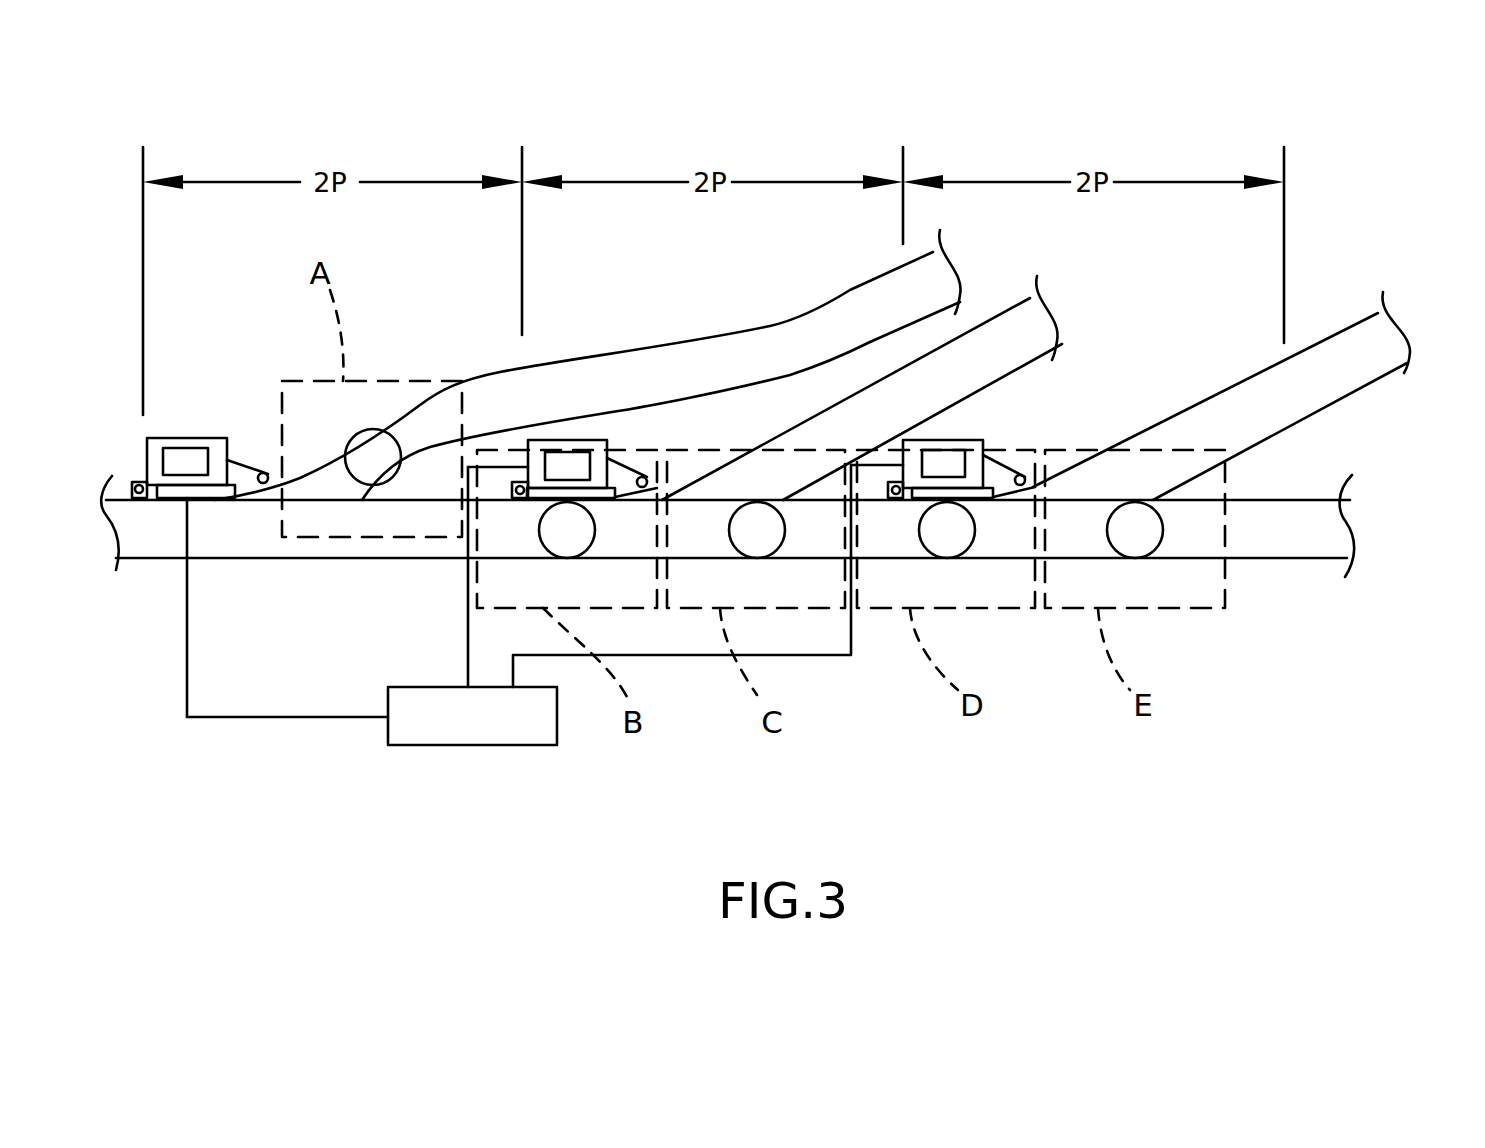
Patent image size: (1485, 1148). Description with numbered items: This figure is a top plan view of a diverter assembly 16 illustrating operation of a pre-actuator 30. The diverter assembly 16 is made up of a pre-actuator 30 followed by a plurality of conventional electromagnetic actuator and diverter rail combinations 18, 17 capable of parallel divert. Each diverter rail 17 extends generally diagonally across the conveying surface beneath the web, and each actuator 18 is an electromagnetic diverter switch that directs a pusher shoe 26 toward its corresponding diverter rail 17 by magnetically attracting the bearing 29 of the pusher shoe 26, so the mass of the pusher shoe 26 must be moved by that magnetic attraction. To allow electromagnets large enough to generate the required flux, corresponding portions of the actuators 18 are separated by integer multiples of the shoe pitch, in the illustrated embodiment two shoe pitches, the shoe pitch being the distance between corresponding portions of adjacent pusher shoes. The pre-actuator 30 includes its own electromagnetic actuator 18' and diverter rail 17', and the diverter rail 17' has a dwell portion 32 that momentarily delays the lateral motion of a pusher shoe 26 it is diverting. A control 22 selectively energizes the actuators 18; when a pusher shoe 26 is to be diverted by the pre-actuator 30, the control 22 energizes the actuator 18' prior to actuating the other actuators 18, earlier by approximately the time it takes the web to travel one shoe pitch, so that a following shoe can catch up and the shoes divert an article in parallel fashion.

The diverter assembly 16 is at (1455, 208).
The diverter rail 17 is at (1036, 357).
The diverter rail of pre-actuator 17' is at (661, 362).
The actuator 18 is at (810, 376).
The electromagnetic actuator of pre-actuator 18' is at (200, 503).
The control 22 is at (597, 737).
The pusher shoe 26 is at (405, 381).
The bearing 29 is at (548, 505).
The pre-actuator 30 is at (252, 234).
The dwell portion 32 is at (617, 347).